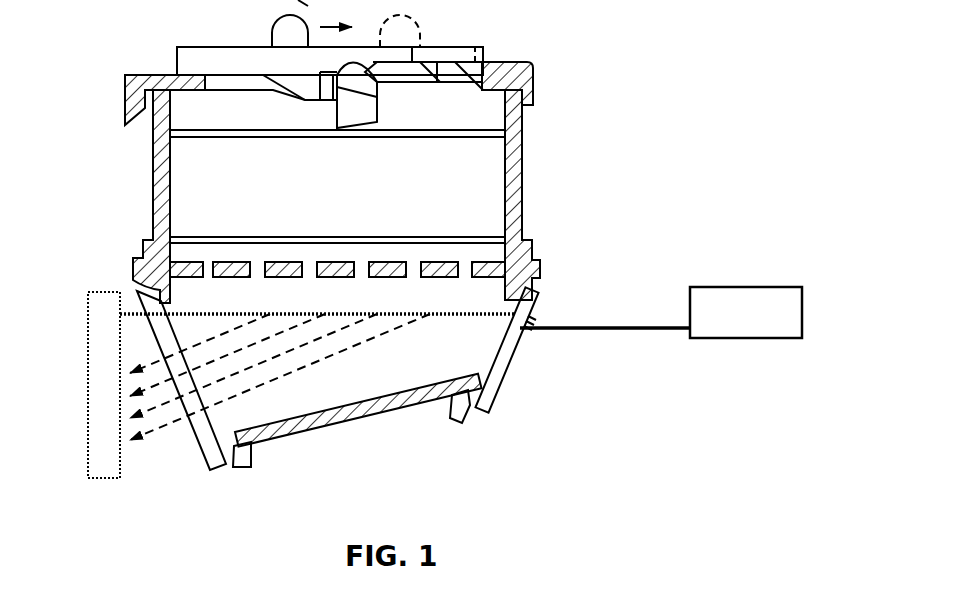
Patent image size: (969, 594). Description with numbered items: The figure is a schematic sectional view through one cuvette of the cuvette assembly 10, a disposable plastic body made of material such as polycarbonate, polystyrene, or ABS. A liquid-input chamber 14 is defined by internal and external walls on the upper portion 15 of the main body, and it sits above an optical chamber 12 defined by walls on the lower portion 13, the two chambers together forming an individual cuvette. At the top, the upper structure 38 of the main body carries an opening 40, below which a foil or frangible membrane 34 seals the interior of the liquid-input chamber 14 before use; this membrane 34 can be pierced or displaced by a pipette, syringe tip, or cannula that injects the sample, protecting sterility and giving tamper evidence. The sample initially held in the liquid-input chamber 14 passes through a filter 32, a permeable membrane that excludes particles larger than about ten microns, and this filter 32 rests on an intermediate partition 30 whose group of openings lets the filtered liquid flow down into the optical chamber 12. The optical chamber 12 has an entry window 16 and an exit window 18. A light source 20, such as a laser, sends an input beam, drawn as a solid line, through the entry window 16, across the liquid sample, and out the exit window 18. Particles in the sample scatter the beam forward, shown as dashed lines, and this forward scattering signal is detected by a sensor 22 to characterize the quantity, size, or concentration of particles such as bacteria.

The cuvette assembly 10 is at (146, 60).
The optical chamber 12 is at (424, 348).
The lower portion 13 is at (377, 415).
The liquid-input chamber 14 is at (460, 181).
The upper portion 15 is at (521, 135).
The entry window 16 is at (519, 356).
The exit window 18 is at (200, 447).
The light source 20 is at (802, 328).
The sensor 22 is at (87, 464).
The intermediate partition 30 is at (450, 282).
The filter 32 is at (450, 240).
The frangible membrane 34 is at (461, 131).
The upper structure 38 is at (128, 78).
The opening 40 is at (421, 108).